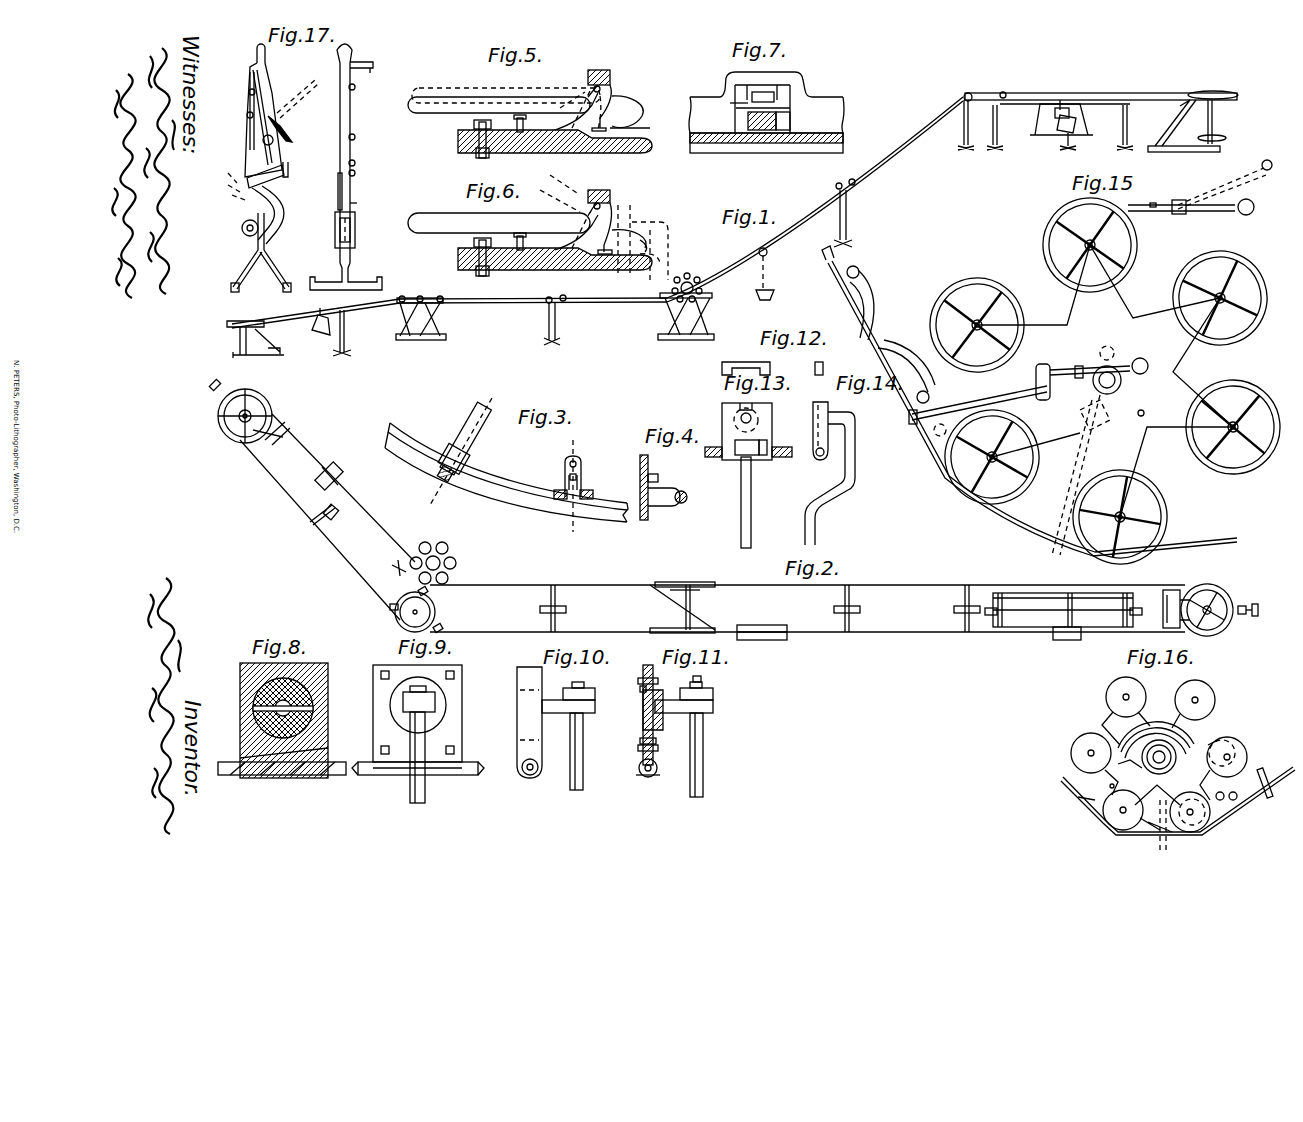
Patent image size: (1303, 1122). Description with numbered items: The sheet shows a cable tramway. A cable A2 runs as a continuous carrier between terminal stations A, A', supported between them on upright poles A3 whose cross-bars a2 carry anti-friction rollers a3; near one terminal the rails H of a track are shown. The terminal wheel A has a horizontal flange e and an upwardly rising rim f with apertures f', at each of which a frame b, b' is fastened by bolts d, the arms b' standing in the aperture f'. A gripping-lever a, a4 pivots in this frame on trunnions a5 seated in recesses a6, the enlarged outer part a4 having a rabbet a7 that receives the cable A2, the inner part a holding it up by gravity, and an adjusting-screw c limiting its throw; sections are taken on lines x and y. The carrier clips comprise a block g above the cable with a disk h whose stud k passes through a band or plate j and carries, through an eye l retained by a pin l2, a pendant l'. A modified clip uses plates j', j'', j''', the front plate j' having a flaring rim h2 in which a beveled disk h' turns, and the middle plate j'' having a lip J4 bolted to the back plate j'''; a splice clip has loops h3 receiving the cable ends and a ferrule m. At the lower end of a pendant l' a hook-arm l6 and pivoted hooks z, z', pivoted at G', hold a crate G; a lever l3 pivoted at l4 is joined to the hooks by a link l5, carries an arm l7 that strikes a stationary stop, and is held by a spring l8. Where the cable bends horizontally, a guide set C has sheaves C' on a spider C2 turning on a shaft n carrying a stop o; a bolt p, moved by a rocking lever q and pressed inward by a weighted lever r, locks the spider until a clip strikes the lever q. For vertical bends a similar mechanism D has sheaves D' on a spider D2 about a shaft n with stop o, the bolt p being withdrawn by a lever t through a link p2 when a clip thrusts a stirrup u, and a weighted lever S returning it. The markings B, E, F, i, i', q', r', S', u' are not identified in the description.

In FIG. 5, the inwardly-extending part of gripping-lever a is at (504, 100).
In FIG. 6, the inwardly-extending part of gripping-lever a is at (499, 222).
In FIG. 7, the inwardly-extending part of gripping-lever a is at (763, 96).
In FIG. 3, the inwardly-extending part of gripping-lever a is at (468, 425).
In FIG. 1, the cross-bars a2 is at (547, 303).
In FIG. 1, the anti-friction supporting rollers a3 is at (574, 292).
In FIG. 5, the outwardly-projecting part of gripping-lever a4 is at (630, 113).
In FIG. 6, the outwardly-projecting part of gripping-lever a4 is at (650, 228).
In FIG. 7, the outwardly-projecting part of gripping-lever a4 is at (740, 110).
In FIG. 3, the outwardly-projecting part of gripping-lever a4 is at (435, 472).
In FIG. 5, the trunnions a5 is at (584, 93).
In FIG. 4, the recesses a6 is at (688, 498).
In FIG. 6, the rabbet a7 is at (650, 247).
In FIG. 1, the terminal wheel A is at (255, 330).
In FIG. 3, the terminal wheel A is at (506, 476).
In FIG. 2, the terminal wheel A is at (250, 412).
In FIG. 1, the terminal station A' is at (1197, 109).
In FIG. 2, the terminal station A' is at (1210, 609).
In FIG. 5, the cable A2 is at (640, 130).
In FIG. 6, the cable A2 is at (655, 232).
In FIG. 1, the cable A2 is at (895, 150).
In FIG. 13, the cable A2 is at (742, 461).
In FIG. 2, the cable A2 is at (712, 523).
In FIG. 8, the cable A2 is at (272, 775).
In FIG. 9, the cable A2 is at (470, 775).
In FIG. 10, the cable A2 is at (548, 786).
In FIG. 11, the cable A2 is at (645, 778).
In FIG. 16, the cable A2 is at (1098, 800).
In FIG. 1, the upright poles A3 is at (557, 316).
In FIG. 5, the frame plate b is at (577, 113).
In FIG. 6, the frame plate b is at (583, 233).
In FIG. 7, the frame plate b is at (763, 116).
In FIG. 3, the frame plate b is at (523, 472).
In FIG. 4, the frame plate b is at (644, 463).
In FIG. 5, the upwardly-extending arms of frame b' is at (621, 93).
In FIG. 6, the upwardly-extending arms of frame b' is at (620, 228).
In FIG. 7, the upwardly-extending arms of frame b' is at (784, 116).
In FIG. 4, the upwardly-extending arms of frame b' is at (660, 487).
In FIG. 1, the bucket B is at (317, 329).
In FIG. 2, the bucket B is at (698, 555).
In FIG. 5, the adjusting-screw c is at (553, 127).
In FIG. 6, the adjusting-screw c is at (553, 246).
In FIG. 3, the adjusting-screw c is at (582, 478).
In FIG. 4, the adjusting-screw c is at (658, 482).
In FIG. 1, the set of anti-friction guide wheels C is at (421, 309).
In FIG. 15, the set of anti-friction guide wheels C is at (1029, 400).
In FIG. 2, the set of anti-friction guide wheels C is at (423, 587).
In FIG. 15, the guide wheels or sheaves C' is at (1106, 376).
In FIG. 15, the spider C2 is at (1190, 363).
In FIG. 5, the bolts d is at (478, 150).
In FIG. 6, the bolts d is at (478, 263).
In FIG. 1, the vertical-bend guide mechanism D is at (686, 304).
In FIG. 2, the vertical-bend guide mechanism D is at (682, 607).
In FIG. 16, the vertical-bend guide mechanism D is at (1164, 748).
In FIG. 16, the pulleys or sheaves D' is at (1213, 690).
In FIG. 16, the spider or supporting-frame D2 is at (1112, 710).
In FIG. 5, the horizontal flange e is at (558, 136).
In FIG. 6, the horizontal flange e is at (612, 258).
In FIG. 7, the horizontal flange e is at (766, 144).
In FIG. 3, the horizontal flange e is at (508, 469).
In FIG. 17, the hanger E is at (298, 165).
In FIG. 1, the hanger E is at (758, 274).
In FIG. 2, the hanger E is at (762, 641).
In FIG. 5, the rim f is at (604, 64).
In FIG. 6, the rim f is at (575, 188).
In FIG. 7, the rim f is at (766, 102).
In FIG. 3, the rim f is at (507, 471).
In FIG. 7, the apertures f' is at (779, 91).
In FIG. 1, the hopper F is at (1055, 119).
In FIG. 2, the hopper F is at (1063, 610).
In FIG. 8, the metallic block g is at (312, 688).
In FIG. 17, the crate or carrier G is at (306, 252).
In FIG. 17, the hook pivot G' is at (236, 200).
In FIG. 13, the wheel or disk h is at (739, 431).
In FIG. 8, the wheel or disk h is at (271, 720).
In FIG. 11, the beveled wheel or disk h' is at (661, 688).
In FIG. 11, the conical flaring rim h2 is at (642, 683).
In FIG. 13, the downwardly-extending loops h3 is at (770, 462).
In FIG. 1, the track rails H is at (1027, 93).
In FIG. 13, the slide i is at (722, 403).
In FIG. 9, the slide i is at (419, 699).
In FIG. 10, the slide rod i' is at (587, 739).
In FIG. 11, the slide rod i' is at (711, 755).
In FIG. 13, the band or plate j is at (748, 416).
In FIG. 9, the band or plate j is at (409, 713).
In FIG. 10, the band or plate j is at (519, 721).
In FIG. 11, the front plate j' is at (662, 715).
In FIG. 9, the middle plate j'' is at (418, 781).
In FIG. 11, the middle plate j'' is at (663, 769).
In FIG. 11, the back plate j''' is at (641, 735).
In FIG. 11, the upwardly-projecting lip J4 is at (640, 742).
In FIG. 14, the stud or short shaft k is at (830, 412).
In FIG. 10, the stud or short shaft k is at (568, 704).
In FIG. 11, the stud or short shaft k is at (684, 704).
In FIG. 10, the eye l is at (579, 697).
In FIG. 11, the eye l is at (696, 697).
In FIG. 17, the pendant or bar l' is at (307, 148).
In FIG. 13, the pendant or bar l' is at (755, 502).
In FIG. 14, the pendant or bar l' is at (837, 478).
In FIG. 9, the pendant or bar l' is at (427, 757).
In FIG. 11, the pin l2 is at (702, 684).
In FIG. 17, the lever l3 is at (250, 83).
In FIG. 17, the lever pivot l4 is at (263, 142).
In FIG. 17, the link l5 is at (284, 178).
In FIG. 17, the hook-arm l6 is at (276, 226).
In FIG. 17, the outwardly-projecting arm l7 is at (373, 64).
In FIG. 17, the spring l8 is at (248, 112).
In FIG. 12, the ferrule or block m is at (760, 358).
In FIG. 13, the ferrule or block m is at (755, 442).
In FIG. 14, the ferrule or block m is at (813, 446).
In FIG. 15, the shaft n is at (1124, 400).
In FIG. 16, the shaft n is at (1130, 759).
In FIG. 15, the cam-like collar stop o is at (1138, 421).
In FIG. 16, the cam-like collar stop o is at (1108, 787).
In FIG. 15, the bolt p is at (1068, 370).
In FIG. 16, the bolt p is at (1166, 722).
In FIG. 16, the link p2 is at (1205, 738).
In FIG. 15, the rocking lever q is at (978, 407).
In FIG. 15, the rod q' is at (1074, 475).
In FIG. 15, the weighted lever r is at (1154, 298).
In FIG. 15, the lever position r' is at (1225, 184).
In FIG. 16, the weighted lever S is at (1096, 753).
In FIG. 16, the link S' is at (1221, 757).
In FIG. 16, the lever t is at (1188, 813).
In FIG. 16, the swinging bar or stirrup u is at (1178, 801).
In FIG. 16, the guide u' is at (1156, 834).
In FIG. 3, the section line x x is at (582, 485).
In FIG. 3, the section line y y is at (465, 446).
In FIG. 17, the hook z is at (337, 185).
In FIG. 17, the hook z' is at (363, 186).